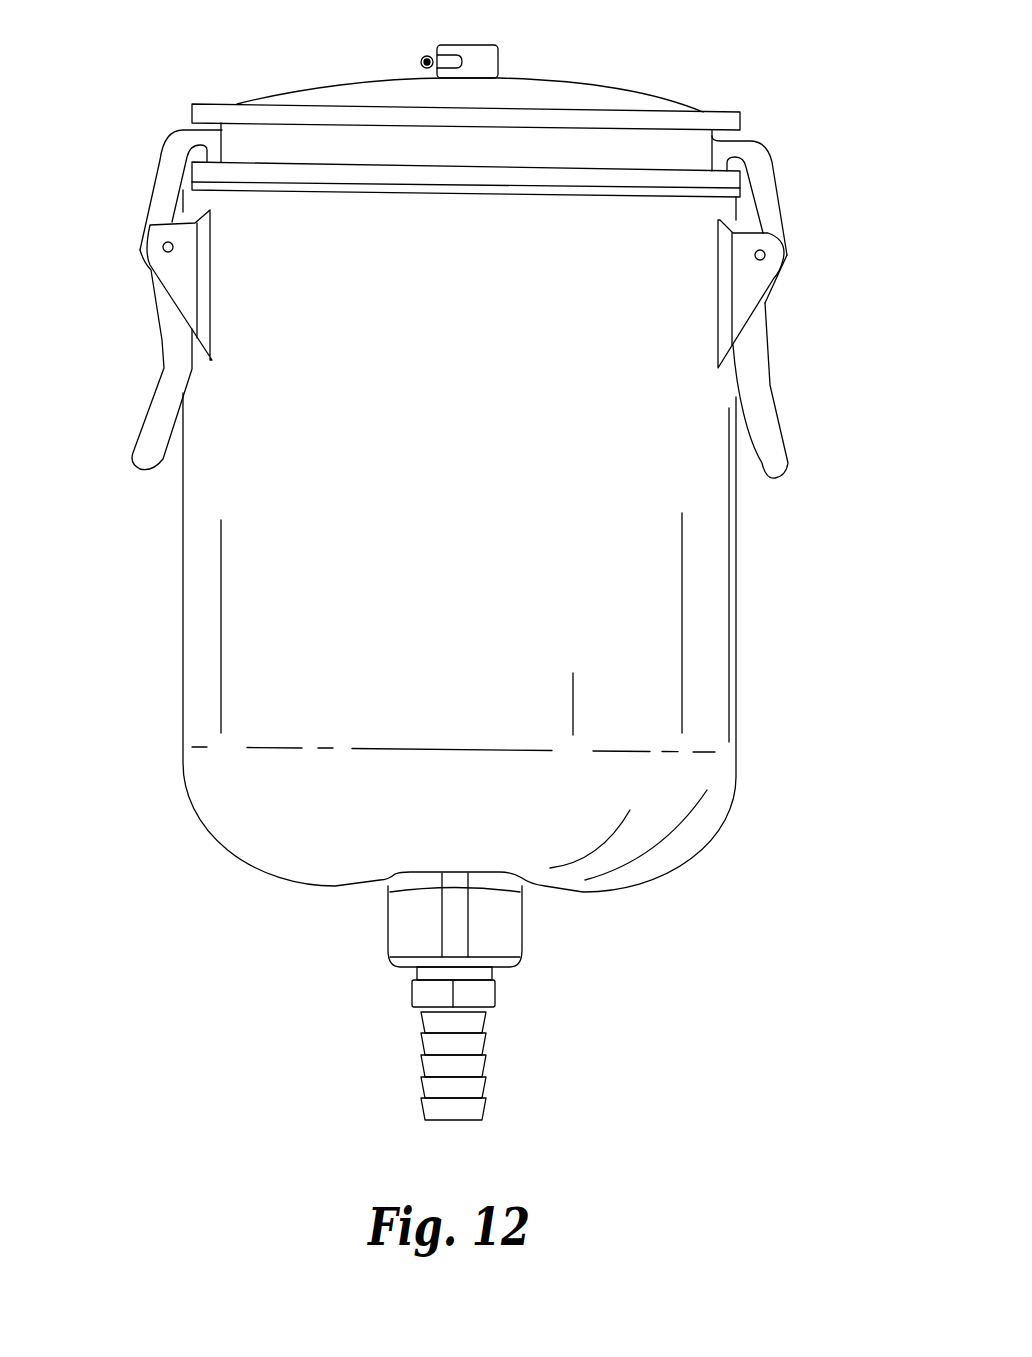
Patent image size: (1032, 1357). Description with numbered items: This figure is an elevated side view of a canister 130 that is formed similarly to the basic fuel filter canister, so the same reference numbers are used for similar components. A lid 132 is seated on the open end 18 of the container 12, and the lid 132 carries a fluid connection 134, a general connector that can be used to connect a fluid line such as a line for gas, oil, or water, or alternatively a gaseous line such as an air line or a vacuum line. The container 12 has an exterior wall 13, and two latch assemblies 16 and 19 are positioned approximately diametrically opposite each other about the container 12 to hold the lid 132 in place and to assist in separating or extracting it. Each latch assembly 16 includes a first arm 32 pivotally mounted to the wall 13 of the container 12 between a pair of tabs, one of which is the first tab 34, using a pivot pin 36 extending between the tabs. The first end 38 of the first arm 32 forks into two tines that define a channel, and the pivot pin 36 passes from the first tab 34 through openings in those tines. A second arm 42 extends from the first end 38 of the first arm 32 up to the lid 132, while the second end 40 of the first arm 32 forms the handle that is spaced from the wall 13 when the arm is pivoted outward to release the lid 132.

The container 12 is at (598, 643).
The wall 13 is at (712, 532).
The latch assembly 16 is at (767, 322).
The open end 18 is at (277, 187).
The latch assembly 19 is at (125, 297).
The first arm 32 is at (755, 322).
The first tab 34 is at (745, 282).
The pivot pin 36 is at (765, 253).
The first end 38 is at (767, 303).
The second end 40 is at (772, 445).
The second arm 42 is at (758, 181).
The canister 130 is at (556, 132).
The lid 132 is at (562, 82).
The fluid connection 134 is at (467, 53).